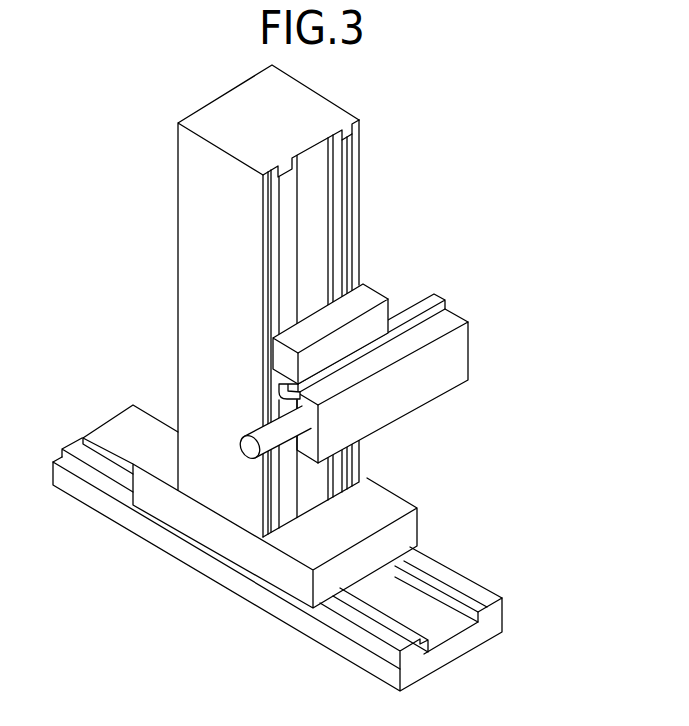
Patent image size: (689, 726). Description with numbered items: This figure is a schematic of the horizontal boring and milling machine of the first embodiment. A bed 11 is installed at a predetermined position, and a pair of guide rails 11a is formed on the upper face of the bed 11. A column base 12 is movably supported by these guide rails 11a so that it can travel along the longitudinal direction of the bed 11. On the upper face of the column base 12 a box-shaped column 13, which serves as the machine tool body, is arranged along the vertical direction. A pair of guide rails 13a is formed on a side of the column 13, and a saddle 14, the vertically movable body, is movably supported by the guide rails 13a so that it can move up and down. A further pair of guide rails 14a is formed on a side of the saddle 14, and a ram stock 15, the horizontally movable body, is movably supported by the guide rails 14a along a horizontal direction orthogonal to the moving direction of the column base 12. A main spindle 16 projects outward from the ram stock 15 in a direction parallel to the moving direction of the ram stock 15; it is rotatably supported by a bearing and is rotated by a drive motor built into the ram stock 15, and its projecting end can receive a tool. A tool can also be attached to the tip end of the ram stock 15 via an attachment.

The bed 11 is at (385, 652).
The guide rails 11a is at (412, 653).
The column base 12 is at (310, 562).
The column 13 is at (292, 115).
The guide rails 13a is at (292, 202).
The saddle 14 is at (348, 313).
The guide rails 14a is at (276, 380).
The ram stock 15 is at (418, 377).
The main spindle 16 is at (289, 430).